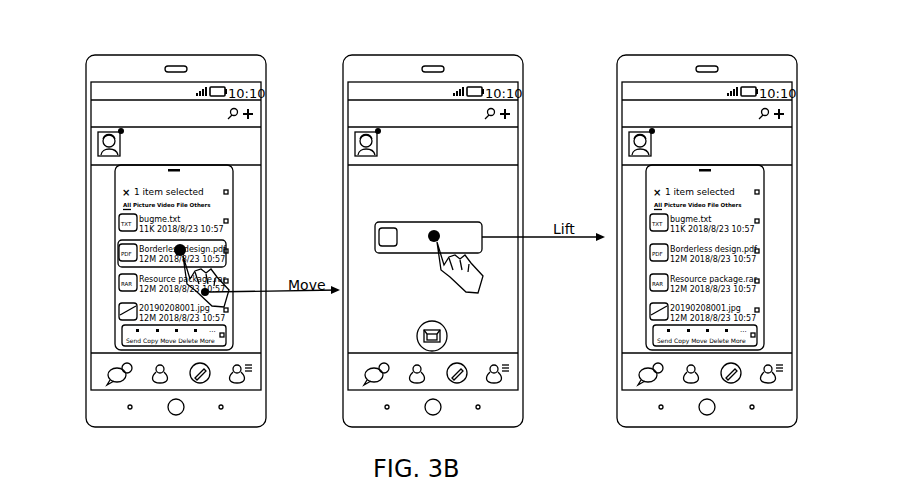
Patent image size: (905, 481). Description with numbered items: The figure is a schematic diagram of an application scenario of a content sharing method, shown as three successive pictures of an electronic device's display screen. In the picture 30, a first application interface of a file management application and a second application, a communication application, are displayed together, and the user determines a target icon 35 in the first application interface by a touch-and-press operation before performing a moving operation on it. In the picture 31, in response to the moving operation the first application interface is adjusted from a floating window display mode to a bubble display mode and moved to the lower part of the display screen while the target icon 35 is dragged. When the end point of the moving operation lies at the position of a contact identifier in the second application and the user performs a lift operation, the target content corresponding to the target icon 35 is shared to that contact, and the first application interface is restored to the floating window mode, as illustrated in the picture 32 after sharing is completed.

The picture 30 is at (168, 62).
The picture 31 is at (423, 215).
The picture 32 is at (668, 215).
The target icon 35 is at (222, 241).